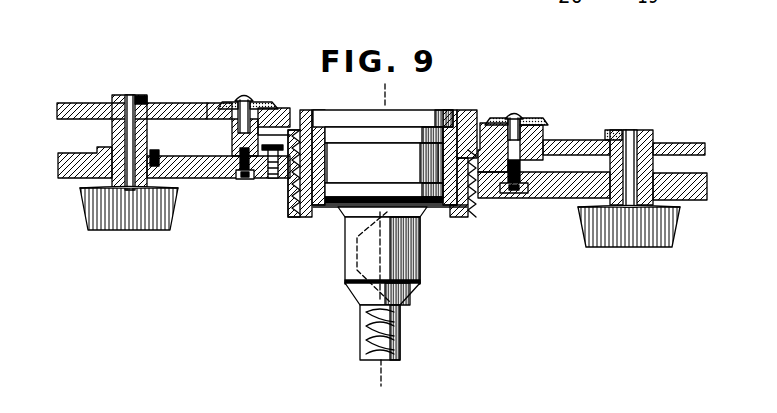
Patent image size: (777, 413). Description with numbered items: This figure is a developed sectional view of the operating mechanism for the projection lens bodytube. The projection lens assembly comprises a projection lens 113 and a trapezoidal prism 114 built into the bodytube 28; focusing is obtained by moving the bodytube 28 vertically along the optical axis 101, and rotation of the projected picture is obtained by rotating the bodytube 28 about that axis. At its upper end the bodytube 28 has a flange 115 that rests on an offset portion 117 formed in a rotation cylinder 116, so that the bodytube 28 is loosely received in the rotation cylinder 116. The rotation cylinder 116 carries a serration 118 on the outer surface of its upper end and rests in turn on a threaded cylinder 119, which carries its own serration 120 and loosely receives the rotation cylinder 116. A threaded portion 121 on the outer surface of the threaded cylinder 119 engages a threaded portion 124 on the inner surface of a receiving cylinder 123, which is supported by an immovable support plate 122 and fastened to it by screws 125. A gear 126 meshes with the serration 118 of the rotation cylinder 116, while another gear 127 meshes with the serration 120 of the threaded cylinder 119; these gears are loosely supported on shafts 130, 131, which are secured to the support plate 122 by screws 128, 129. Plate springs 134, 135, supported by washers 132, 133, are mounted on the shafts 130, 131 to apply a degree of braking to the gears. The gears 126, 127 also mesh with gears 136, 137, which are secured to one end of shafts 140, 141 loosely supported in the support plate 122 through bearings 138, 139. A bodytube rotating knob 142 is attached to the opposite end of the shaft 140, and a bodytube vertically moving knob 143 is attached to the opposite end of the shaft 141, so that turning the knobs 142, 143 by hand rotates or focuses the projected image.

The bodytube 28 is at (418, 262).
The support 101 is at (383, 370).
The projection lens 113 is at (360, 330).
The trapezoidal prism 114 is at (355, 262).
The flange 115 is at (408, 112).
The rotation cylinder 116 is at (447, 210).
The offset portion 117 is at (453, 115).
The serration 118 is at (483, 125).
The threaded cylinder 119 is at (312, 208).
The serration 120 is at (287, 113).
The threaded portion 121 is at (298, 215).
The support plate 122 is at (562, 200).
The receiving cylinder 123 is at (290, 205).
The threaded portion 124 is at (476, 215).
The screws 125 is at (272, 180).
The gear 126 is at (232, 125).
The gear 127 is at (545, 135).
The screw 128 is at (236, 178).
The screw 129 is at (504, 192).
The shaft 130 is at (243, 93).
The shaft 131 is at (530, 118).
The washer 132 is at (268, 102).
The washer 133 is at (512, 110).
The plate spring 134 is at (222, 103).
The plate spring 135 is at (542, 118).
The gear 136 is at (172, 108).
The gear 137 is at (662, 145).
The bearing 138 is at (110, 150).
The bearing 139 is at (660, 172).
The shaft 140 is at (127, 95).
The shaft 141 is at (630, 130).
The bodytube rotating knob 142 is at (140, 228).
The bodytube vertically moving knob 143 is at (632, 247).